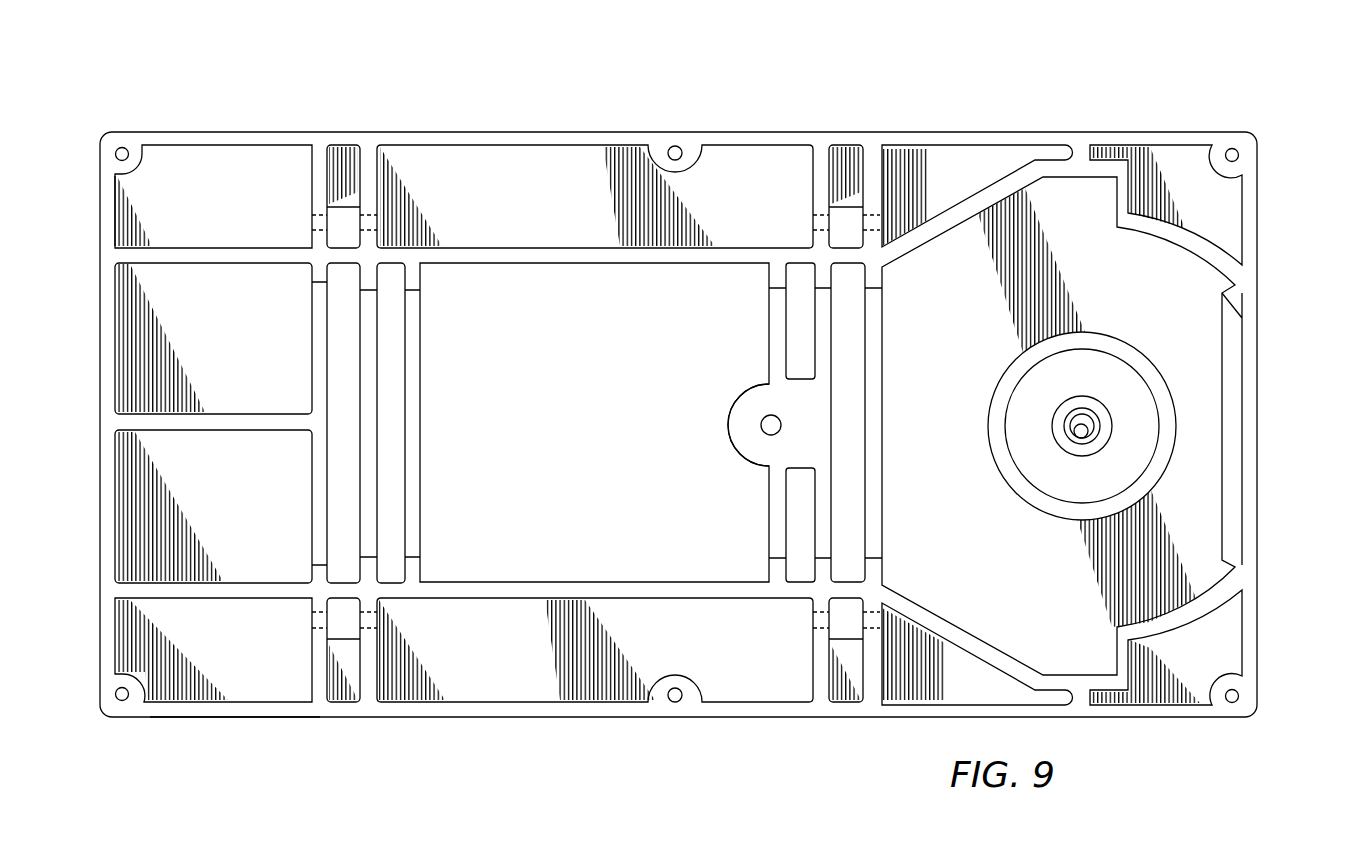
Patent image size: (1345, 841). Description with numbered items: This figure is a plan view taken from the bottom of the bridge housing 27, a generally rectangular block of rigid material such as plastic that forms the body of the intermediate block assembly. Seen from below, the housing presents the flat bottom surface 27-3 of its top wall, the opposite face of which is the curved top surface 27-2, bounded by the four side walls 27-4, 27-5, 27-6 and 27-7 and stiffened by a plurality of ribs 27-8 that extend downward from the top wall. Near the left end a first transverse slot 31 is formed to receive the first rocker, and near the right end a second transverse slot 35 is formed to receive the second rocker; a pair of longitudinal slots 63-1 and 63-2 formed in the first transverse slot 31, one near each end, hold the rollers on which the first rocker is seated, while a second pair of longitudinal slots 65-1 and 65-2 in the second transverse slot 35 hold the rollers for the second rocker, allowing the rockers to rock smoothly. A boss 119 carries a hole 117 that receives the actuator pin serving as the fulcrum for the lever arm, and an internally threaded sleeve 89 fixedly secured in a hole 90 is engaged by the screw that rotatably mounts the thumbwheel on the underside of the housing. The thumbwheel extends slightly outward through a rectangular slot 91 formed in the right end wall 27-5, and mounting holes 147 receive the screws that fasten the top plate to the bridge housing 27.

The bridge housing 27 is at (504, 128).
The mounting holes 147 is at (124, 146).
The side wall 27-5 is at (226, 147).
The side wall 27-4 is at (115, 222).
The longitudinal slot 63-2 is at (324, 213).
The longitudinal slot 65-2 is at (822, 214).
The flat bottom surface 27-3 is at (559, 168).
The ribs 27-8 is at (544, 265).
The curved top surface 27-2 is at (770, 314).
The first transverse slot 31 is at (361, 353).
The second transverse slot 35 is at (863, 369).
The boss 119 is at (727, 408).
The hole 117 is at (764, 428).
The internally threaded sleeve 89 is at (1089, 418).
The hole 90 is at (1072, 437).
The rectangular slot 91 is at (1228, 306).
The side wall 27-7 is at (1256, 642).
The longitudinal slot 63-1 is at (324, 641).
The longitudinal slot 65-1 is at (826, 607).
The side wall 27-6 is at (199, 716).